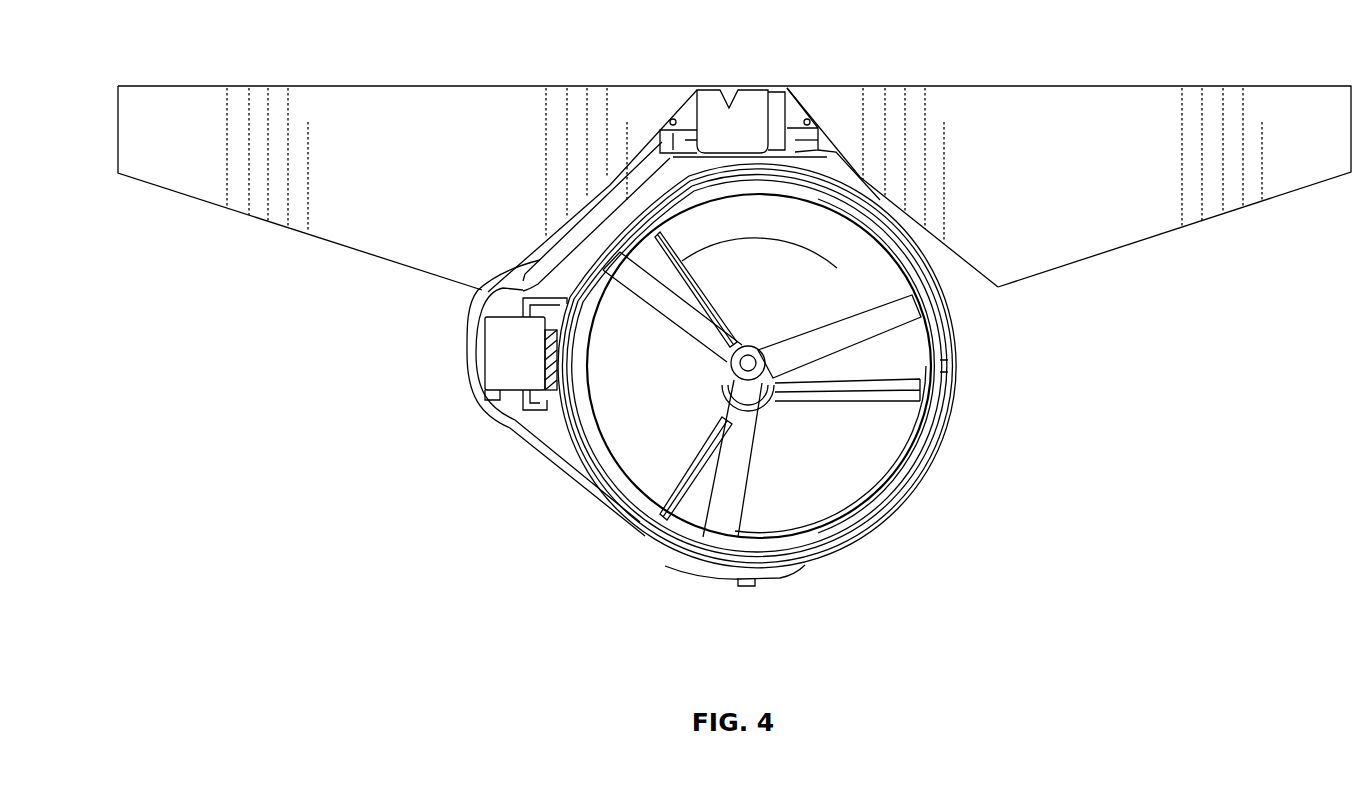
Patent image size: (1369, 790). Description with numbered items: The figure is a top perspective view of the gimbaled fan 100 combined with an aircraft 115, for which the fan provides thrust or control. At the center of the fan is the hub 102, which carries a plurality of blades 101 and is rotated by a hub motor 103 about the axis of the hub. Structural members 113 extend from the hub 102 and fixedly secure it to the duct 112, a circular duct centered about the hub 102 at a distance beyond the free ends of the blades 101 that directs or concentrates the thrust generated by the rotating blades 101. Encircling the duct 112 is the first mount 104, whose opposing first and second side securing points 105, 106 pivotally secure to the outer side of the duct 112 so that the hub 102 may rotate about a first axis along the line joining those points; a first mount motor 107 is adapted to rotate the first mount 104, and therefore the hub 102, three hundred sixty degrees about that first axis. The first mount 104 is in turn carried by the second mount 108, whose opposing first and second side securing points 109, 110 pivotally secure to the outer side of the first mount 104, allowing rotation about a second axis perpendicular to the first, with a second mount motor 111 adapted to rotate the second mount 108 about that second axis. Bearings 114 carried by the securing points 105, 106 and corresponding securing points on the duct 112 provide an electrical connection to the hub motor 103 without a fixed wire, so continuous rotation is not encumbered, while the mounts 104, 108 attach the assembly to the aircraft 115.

The gimbaled fan 100 is at (950, 558).
The blade 101 is at (798, 330).
The hub 102 is at (714, 391).
The hub motor 103 is at (787, 407).
The first mount 104 is at (681, 572).
The first mount first side securing point 105 is at (960, 386).
The first mount second side securing point 106 is at (540, 413).
The first mount motor 107 is at (480, 355).
The second mount 108 is at (966, 401).
The second mount first side securing point 109 is at (770, 577).
The second mount second side securing point 110 is at (783, 147).
The second mount motor 111 is at (707, 84).
The duct 112 is at (864, 489).
The structural member 113 is at (710, 301).
The bearing 114 is at (664, 126).
The aircraft 115 is at (315, 84).